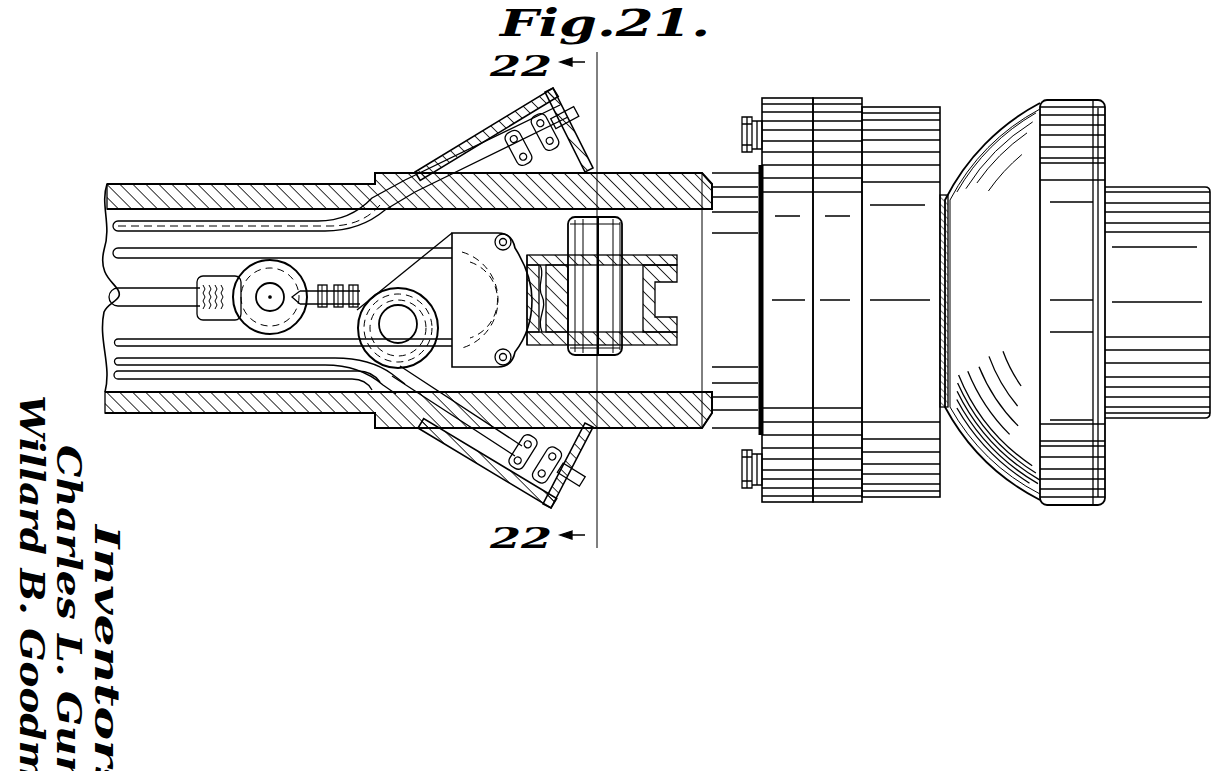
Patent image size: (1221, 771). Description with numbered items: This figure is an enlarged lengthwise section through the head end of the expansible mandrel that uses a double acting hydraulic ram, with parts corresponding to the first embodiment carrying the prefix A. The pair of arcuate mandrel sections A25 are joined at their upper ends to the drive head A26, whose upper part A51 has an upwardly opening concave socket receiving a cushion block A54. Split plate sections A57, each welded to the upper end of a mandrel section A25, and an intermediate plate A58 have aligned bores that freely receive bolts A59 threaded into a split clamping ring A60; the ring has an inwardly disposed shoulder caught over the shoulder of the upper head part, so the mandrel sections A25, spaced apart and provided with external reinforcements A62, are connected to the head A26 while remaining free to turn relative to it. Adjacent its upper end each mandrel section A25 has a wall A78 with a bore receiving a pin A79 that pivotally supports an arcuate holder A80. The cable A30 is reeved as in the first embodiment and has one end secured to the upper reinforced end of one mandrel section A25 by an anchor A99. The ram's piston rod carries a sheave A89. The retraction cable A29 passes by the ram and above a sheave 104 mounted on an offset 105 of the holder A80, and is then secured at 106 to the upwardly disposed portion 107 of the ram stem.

The mandrel section A25 is at (180, 184).
The cable A30 is at (283, 216).
The retraction cable A29 is at (300, 382).
The sheave A89 is at (210, 346).
The upwardly disposed portion of the ram stem 107 is at (118, 291).
The securing point 106 is at (299, 297).
The offset of the holder 105 is at (410, 288).
The anchor A99 is at (478, 128).
The sheave 104 is at (350, 430).
The wall A78 is at (652, 254).
The arcuate holder A80 is at (552, 355).
The pin A79 is at (605, 216).
The external reinforcements A62 is at (706, 428).
The split plate sections A57 is at (785, 503).
The intermediate plate A58 is at (840, 503).
The split clamping ring A60 is at (916, 498).
The bolts A59 is at (745, 120).
The drive head A26 is at (963, 138).
The upper part of the head A51 is at (1078, 506).
The cushion block A54 is at (1168, 419).